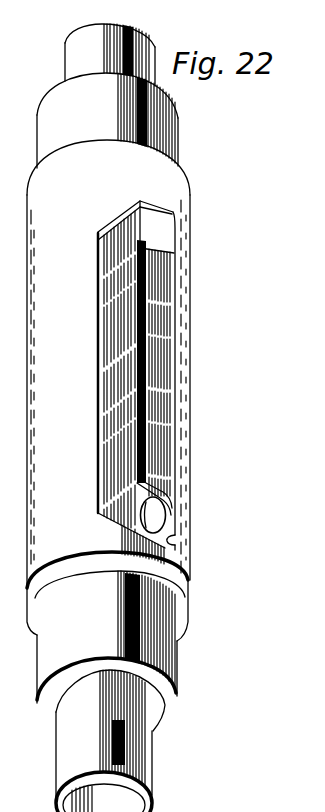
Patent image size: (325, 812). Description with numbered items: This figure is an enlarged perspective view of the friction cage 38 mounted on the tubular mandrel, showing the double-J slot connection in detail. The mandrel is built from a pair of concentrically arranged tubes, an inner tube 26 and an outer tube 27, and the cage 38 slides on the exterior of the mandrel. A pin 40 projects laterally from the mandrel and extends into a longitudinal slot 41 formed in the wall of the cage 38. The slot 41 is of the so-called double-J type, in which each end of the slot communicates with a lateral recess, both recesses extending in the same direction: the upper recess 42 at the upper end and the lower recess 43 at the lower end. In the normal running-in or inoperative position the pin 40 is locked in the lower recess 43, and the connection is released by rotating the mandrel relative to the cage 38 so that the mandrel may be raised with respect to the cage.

The inner tube 26 is at (87, 60).
The outer tube 27 is at (178, 155).
The friction cage 38 is at (190, 324).
The upper recess 42 is at (165, 211).
The longitudinal slot 41 is at (140, 417).
The pin 40 is at (157, 517).
The lower recess 43 is at (168, 543).